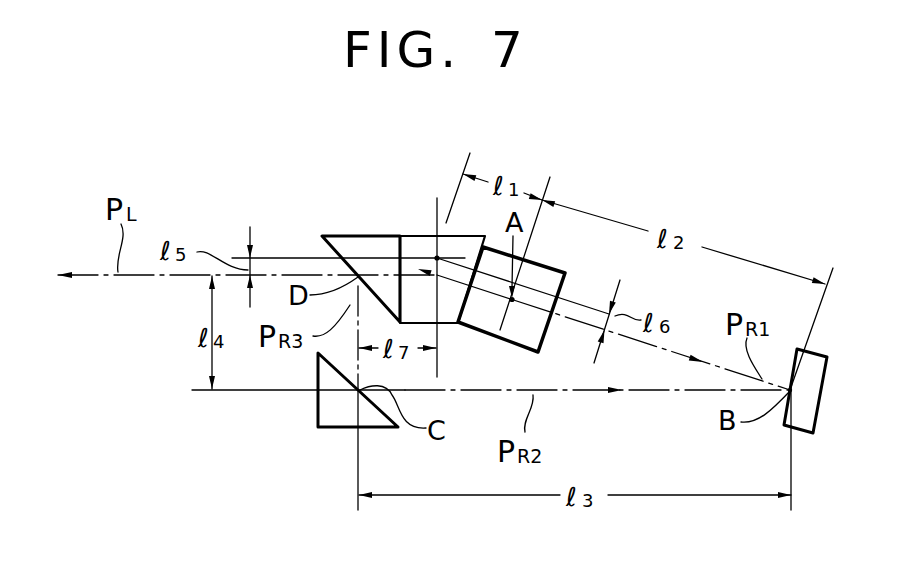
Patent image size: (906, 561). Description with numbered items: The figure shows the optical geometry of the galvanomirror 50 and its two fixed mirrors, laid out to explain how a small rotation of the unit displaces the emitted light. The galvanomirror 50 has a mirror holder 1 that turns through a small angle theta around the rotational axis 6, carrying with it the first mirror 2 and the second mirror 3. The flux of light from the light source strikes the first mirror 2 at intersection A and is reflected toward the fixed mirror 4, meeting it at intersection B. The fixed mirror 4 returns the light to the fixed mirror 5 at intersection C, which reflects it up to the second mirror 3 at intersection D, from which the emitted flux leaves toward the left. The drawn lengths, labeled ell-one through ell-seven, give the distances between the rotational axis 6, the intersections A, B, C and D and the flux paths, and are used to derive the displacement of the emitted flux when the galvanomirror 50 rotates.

The mirror holder 1 is at (399, 277).
The first mirror 2 is at (556, 270).
The second mirror 3 is at (345, 246).
The fixed mirror 4 is at (812, 395).
The fixed mirror 5 is at (318, 410).
The rotational axis 6 is at (434, 256).
The galvanomirror 50 is at (449, 240).